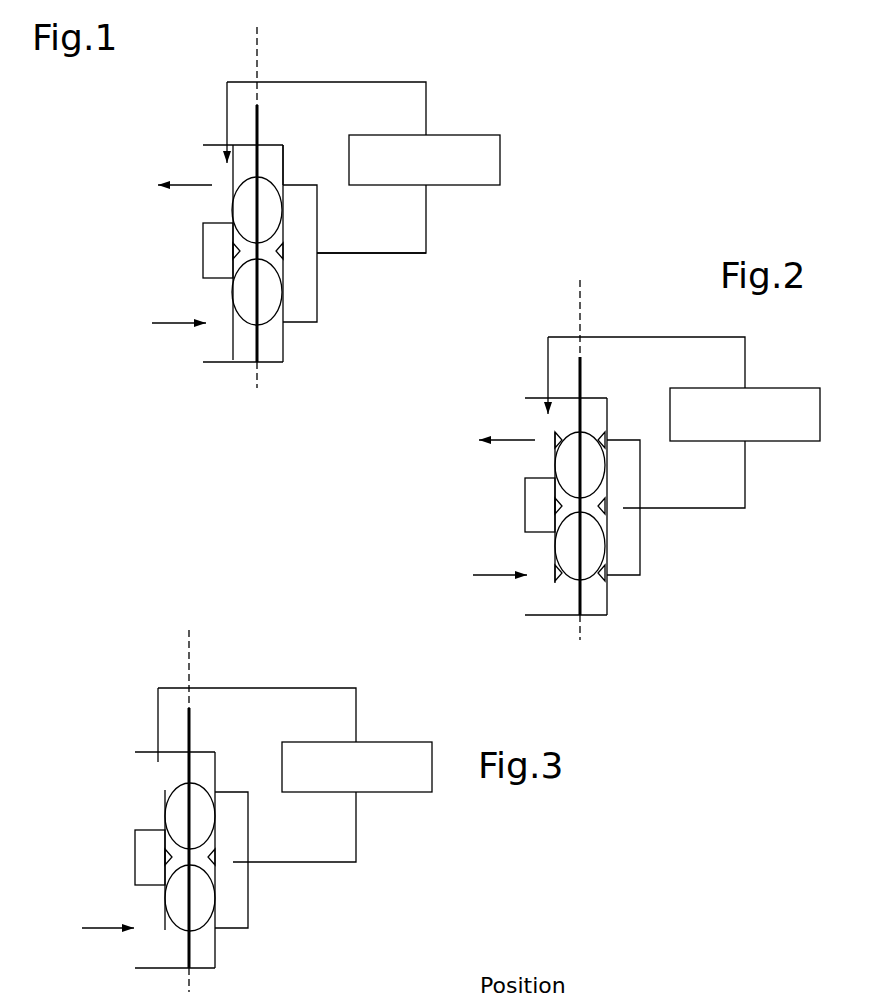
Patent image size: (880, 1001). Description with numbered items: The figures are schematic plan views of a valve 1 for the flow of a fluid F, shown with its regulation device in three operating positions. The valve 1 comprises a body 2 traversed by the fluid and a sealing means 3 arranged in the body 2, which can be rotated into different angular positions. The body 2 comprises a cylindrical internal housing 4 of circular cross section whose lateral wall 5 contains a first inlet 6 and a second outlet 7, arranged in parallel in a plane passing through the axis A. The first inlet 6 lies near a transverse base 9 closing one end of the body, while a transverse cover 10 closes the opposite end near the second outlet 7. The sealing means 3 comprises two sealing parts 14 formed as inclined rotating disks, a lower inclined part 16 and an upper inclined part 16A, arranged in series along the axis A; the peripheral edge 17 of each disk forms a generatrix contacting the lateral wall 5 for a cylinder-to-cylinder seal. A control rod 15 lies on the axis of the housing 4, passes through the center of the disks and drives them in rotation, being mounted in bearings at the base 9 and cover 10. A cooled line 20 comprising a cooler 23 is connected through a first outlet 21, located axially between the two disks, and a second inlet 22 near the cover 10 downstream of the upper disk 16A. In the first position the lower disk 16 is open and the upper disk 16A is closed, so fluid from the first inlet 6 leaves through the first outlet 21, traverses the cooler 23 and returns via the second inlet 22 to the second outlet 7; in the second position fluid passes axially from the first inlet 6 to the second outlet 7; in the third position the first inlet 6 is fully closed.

In FIG. 1, the valve 1 is at (241, 248).
In FIG. 1, the body 2 is at (322, 215).
In FIG. 1, the sealing means 3 is at (228, 224).
In FIG. 2, the sealing means 3 is at (639, 475).
In FIG. 3, the sealing means 3 is at (187, 818).
In FIG. 1, the cylindrical internal housing 4 is at (272, 251).
In FIG. 2, the cylindrical internal housing 4 is at (598, 505).
In FIG. 3, the cylindrical internal housing 4 is at (212, 856).
In FIG. 1, the lateral wall 5 is at (243, 150).
In FIG. 2, the lateral wall 5 is at (608, 418).
In FIG. 3, the lateral wall 5 is at (167, 858).
In FIG. 1, the first inlet 6 is at (212, 340).
In FIG. 2, the first inlet 6 is at (537, 592).
In FIG. 3, the first inlet 6 is at (143, 953).
In FIG. 1, the second outlet 7 is at (205, 162).
In FIG. 2, the second outlet 7 is at (535, 412).
In FIG. 3, the second outlet 7 is at (143, 765).
In FIG. 1, the transverse base 9 is at (259, 366).
In FIG. 1, the transverse cover 10 is at (272, 142).
In FIG. 1, the sealing parts 14 is at (266, 296).
In FIG. 1, the control rod 15 is at (262, 118).
In FIG. 2, the control rod 15 is at (581, 600).
In FIG. 3, the control rod 15 is at (205, 768).
In FIG. 1, the lower inclined part 16 is at (285, 323).
In FIG. 2, the lower inclined part 16 is at (586, 574).
In FIG. 3, the lower inclined part 16 is at (230, 921).
In FIG. 1, the upper inclined part 16A is at (199, 206).
In FIG. 2, the upper inclined part 16A is at (592, 463).
In FIG. 3, the upper inclined part 16A is at (165, 790).
In FIG. 1, the peripheral edge 17 is at (235, 216).
In FIG. 3, the peripheral edge 17 is at (215, 931).
In FIG. 1, the cooled line 20 is at (430, 96).
In FIG. 2, the cooled line 20 is at (724, 516).
In FIG. 3, the cooled line 20 is at (364, 838).
In FIG. 1, the first outlet 21 is at (315, 252).
In FIG. 1, the second inlet 22 is at (220, 160).
In FIG. 1, the cooler 23 is at (424, 160).
In FIG. 2, the cooler 23 is at (745, 414).
In FIG. 3, the cooler 23 is at (357, 767).
In FIG. 1, the axis A is at (257, 33).
In FIG. 1, the fluid F is at (182, 242).
In FIG. 2, the fluid F is at (504, 492).
In FIG. 3, the fluid F is at (108, 913).